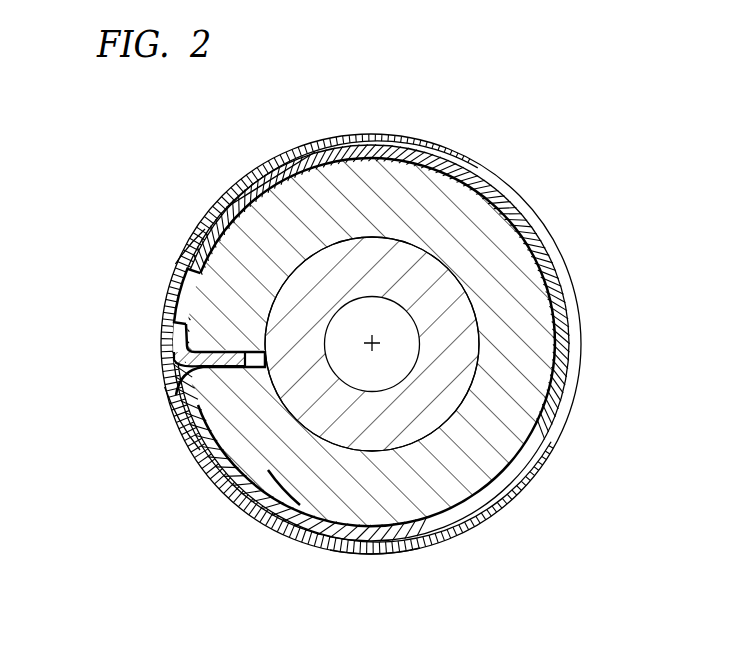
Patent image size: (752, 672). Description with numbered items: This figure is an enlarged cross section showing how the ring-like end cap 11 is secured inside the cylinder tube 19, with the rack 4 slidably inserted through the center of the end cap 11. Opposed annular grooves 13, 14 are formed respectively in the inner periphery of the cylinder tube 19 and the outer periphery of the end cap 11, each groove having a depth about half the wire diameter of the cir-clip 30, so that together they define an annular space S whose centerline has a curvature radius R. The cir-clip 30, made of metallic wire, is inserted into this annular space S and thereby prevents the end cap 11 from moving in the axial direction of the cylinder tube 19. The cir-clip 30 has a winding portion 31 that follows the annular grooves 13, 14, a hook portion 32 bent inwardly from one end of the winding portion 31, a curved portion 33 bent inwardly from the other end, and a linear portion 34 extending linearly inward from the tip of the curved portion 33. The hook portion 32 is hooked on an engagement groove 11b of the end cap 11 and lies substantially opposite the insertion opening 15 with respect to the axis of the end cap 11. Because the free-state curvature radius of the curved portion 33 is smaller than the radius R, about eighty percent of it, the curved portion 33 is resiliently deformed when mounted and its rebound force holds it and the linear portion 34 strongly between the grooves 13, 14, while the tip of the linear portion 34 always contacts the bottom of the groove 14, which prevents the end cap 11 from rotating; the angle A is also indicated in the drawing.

The rack 4 is at (357, 260).
The end cap 11 is at (330, 532).
The engagement groove 11b is at (296, 480).
The annular groove 13 is at (190, 362).
The annular groove 14 is at (183, 343).
The insertion opening 15 is at (578, 360).
The cylinder tube 19 is at (533, 204).
The cir-clip 30 is at (563, 312).
The winding portion 31 is at (393, 552).
The hook portion 32 is at (181, 400).
The curved portion 33 is at (216, 207).
The linear portion 34 is at (198, 254).
The curvature radius of the centerline of the annular space R is at (372, 343).
The annular space S is at (162, 310).
The angle A is at (130, 302).